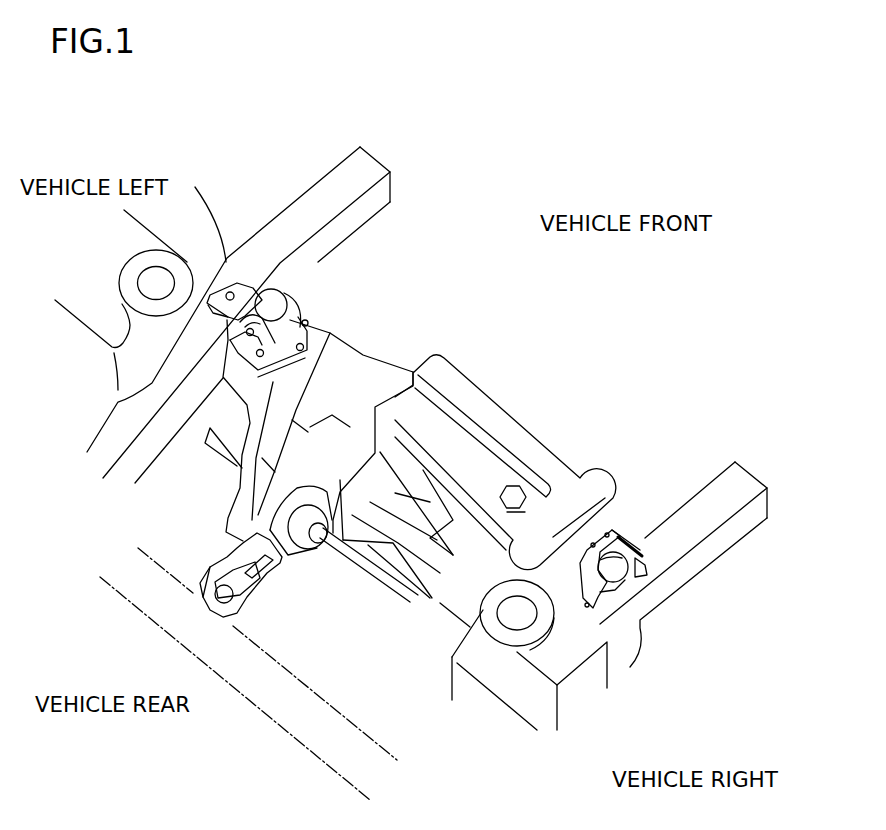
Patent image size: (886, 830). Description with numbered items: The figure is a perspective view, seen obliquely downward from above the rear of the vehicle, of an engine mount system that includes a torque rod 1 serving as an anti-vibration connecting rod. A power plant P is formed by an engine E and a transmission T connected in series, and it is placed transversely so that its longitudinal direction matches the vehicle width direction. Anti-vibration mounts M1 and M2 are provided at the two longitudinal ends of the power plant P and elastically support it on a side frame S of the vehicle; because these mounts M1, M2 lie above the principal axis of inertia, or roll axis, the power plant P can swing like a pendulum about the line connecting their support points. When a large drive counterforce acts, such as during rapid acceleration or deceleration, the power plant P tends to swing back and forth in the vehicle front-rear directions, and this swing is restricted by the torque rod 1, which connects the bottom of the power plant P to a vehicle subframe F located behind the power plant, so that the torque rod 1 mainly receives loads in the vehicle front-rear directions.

The side frame S is at (334, 190).
The anti-vibration mount M1 is at (300, 295).
The anti-vibration mount M2 is at (633, 528).
The power plant P is at (498, 280).
The transmission T is at (406, 357).
The engine E is at (464, 360).
The torque rod 1 is at (225, 555).
The vehicle subframe F is at (243, 683).